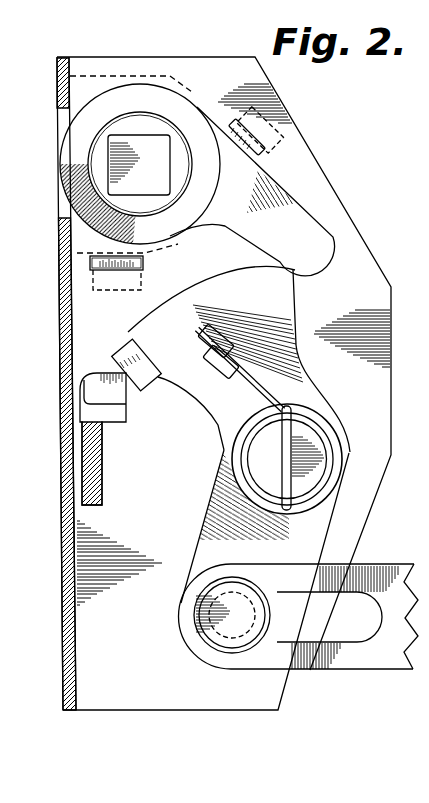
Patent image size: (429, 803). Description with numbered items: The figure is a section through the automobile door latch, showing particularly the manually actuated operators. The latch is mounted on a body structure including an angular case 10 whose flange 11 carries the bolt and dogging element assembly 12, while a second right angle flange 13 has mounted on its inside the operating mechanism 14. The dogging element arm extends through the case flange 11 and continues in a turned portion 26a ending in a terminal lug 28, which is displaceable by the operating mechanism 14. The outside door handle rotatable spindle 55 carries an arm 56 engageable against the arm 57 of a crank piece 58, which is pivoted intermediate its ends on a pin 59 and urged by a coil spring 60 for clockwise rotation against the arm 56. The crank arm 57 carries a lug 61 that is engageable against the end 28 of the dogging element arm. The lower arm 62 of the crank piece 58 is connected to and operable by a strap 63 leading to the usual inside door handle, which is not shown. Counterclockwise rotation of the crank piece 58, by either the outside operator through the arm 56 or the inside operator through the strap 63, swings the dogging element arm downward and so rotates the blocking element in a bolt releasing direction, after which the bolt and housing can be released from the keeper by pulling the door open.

The angular case 10 is at (62, 482).
The flange 11 is at (57, 288).
The bolt and dogging element assembly 12 is at (92, 371).
The second right angle flange 13 is at (380, 337).
The operating mechanism 14 is at (338, 273).
The turned portion 26a is at (103, 472).
The terminal lug 28 is at (114, 395).
The outside door handle spindle 55 is at (140, 187).
The arm 56 is at (293, 198).
The crank arm 57 is at (239, 359).
The crank piece 58 is at (346, 446).
The pin 59 is at (287, 459).
The coil spring 60 is at (293, 407).
The lug 61 is at (125, 350).
The lower arm 62 is at (183, 527).
The strap 63 is at (344, 660).